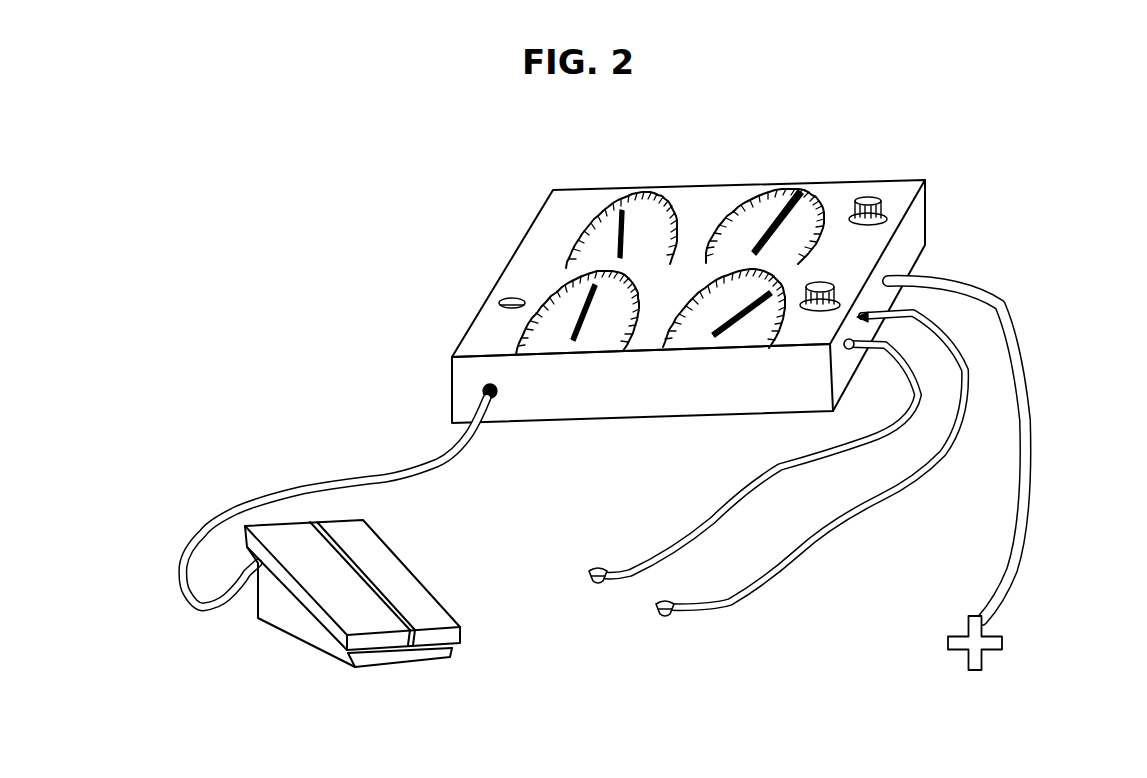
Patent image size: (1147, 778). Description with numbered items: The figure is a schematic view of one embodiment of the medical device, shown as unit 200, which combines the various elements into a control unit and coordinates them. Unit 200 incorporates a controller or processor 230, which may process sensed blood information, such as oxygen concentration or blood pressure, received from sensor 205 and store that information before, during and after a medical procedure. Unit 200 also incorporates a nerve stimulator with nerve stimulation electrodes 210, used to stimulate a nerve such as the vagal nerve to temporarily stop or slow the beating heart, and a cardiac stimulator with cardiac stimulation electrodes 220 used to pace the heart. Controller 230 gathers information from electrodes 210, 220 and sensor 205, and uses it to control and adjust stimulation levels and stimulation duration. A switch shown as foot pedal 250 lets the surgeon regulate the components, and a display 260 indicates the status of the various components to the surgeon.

The unit 200 is at (426, 270).
The sensor 205 is at (983, 656).
The nerve stimulation electrode 210 is at (668, 616).
The cardiac stimulation electrode 220 is at (598, 584).
The controller 230 is at (572, 193).
The foot pedal 250 is at (437, 657).
The display 260 is at (803, 187).